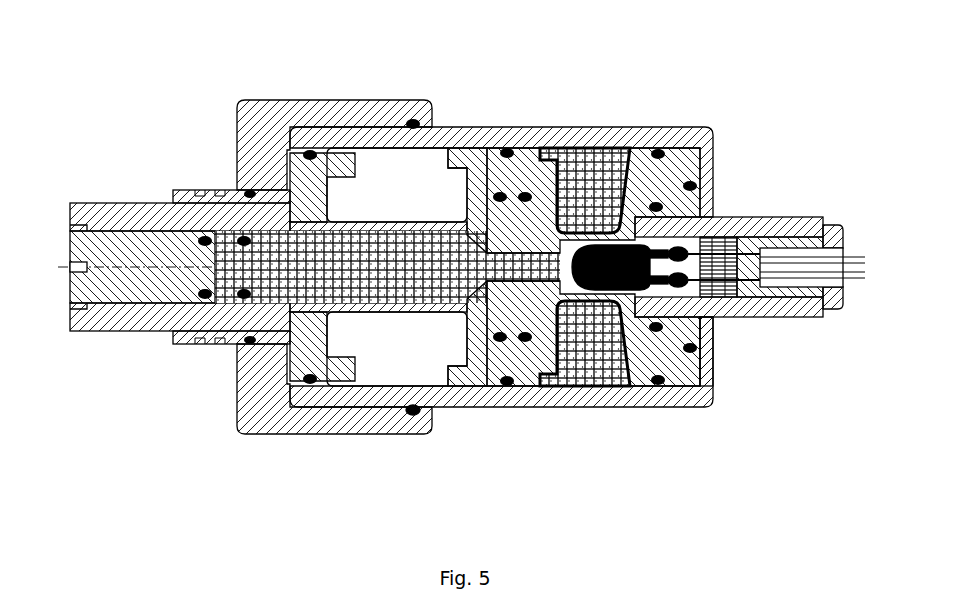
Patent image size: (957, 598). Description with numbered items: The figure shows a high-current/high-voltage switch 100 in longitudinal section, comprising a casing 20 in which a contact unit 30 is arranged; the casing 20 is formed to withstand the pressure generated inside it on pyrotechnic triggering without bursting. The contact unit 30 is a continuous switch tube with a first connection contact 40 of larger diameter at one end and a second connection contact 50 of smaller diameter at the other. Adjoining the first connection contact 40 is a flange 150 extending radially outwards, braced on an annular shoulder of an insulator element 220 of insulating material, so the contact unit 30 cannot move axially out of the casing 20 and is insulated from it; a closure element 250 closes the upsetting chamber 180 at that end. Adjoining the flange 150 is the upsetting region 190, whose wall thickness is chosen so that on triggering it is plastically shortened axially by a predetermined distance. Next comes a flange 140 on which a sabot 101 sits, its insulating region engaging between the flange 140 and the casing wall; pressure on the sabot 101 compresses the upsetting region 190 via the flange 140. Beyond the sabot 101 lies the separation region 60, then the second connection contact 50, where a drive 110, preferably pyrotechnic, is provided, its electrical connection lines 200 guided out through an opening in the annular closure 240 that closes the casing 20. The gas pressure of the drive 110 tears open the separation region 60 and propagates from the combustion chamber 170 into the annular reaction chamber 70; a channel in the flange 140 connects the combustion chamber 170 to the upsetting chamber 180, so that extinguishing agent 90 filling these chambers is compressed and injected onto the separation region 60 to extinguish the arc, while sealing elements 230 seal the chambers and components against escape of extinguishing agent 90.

The high-current/high-voltage switch 100 is at (693, 101).
The casing 20 is at (519, 136).
The contact unit 30 is at (593, 200).
The first connection contact 40 is at (140, 322).
The second connection contact 50 is at (762, 220).
The separation region 60 is at (582, 302).
The reaction chamber 70 is at (594, 168).
The extinguishing agent 90 is at (412, 271).
The sabot 101 is at (503, 365).
The drive 110 is at (612, 300).
The flange 140 is at (481, 193).
The flange 150 is at (323, 183).
The combustion chamber 170 is at (561, 303).
The upsetting chamber 180 is at (372, 247).
The upsetting region 190 is at (420, 318).
The electrical connection lines 200 is at (862, 254).
The insulator element 220 is at (215, 342).
The sealing element 230 is at (418, 412).
The closure 240 is at (720, 326).
The closure element for upsetting chamber 250 is at (82, 277).